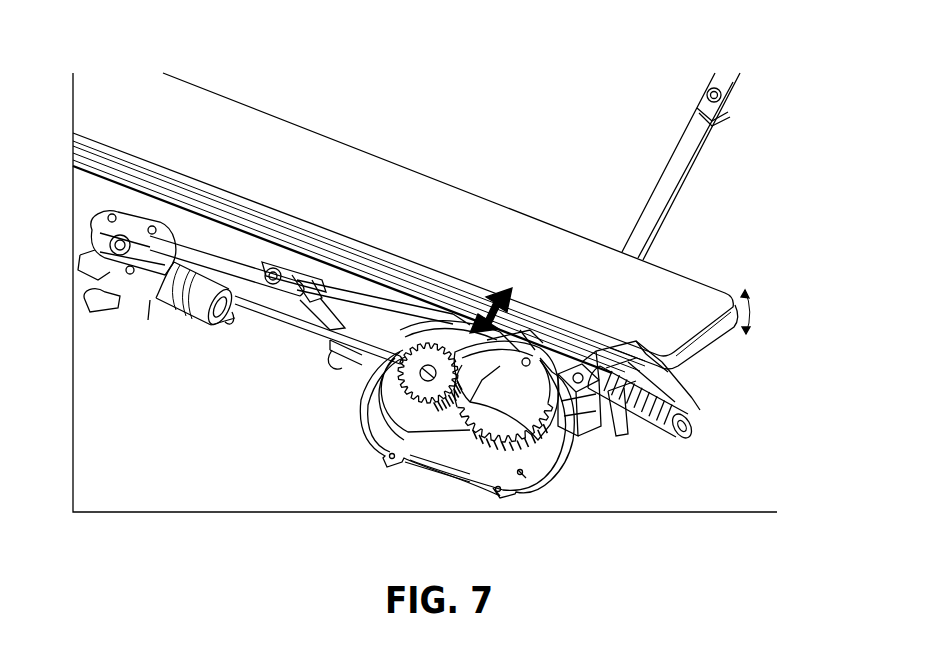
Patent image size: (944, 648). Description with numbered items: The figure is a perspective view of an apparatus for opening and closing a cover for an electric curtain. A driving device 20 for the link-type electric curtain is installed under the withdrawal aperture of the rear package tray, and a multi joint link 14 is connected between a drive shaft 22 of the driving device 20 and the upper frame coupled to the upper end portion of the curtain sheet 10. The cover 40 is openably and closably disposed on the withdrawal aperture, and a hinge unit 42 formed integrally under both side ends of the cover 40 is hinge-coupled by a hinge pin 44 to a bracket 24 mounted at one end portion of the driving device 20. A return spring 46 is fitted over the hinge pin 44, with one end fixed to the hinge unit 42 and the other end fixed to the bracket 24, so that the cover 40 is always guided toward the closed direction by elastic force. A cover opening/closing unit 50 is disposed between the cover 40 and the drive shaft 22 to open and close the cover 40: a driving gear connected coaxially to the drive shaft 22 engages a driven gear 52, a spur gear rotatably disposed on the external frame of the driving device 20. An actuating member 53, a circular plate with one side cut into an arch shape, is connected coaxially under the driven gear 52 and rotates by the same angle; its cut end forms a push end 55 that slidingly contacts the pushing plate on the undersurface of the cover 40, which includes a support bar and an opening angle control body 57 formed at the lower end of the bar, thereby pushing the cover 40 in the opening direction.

The curtain sheet 10 is at (558, 97).
The cover 40 is at (329, 132).
The multi joint link 14 is at (667, 192).
The opening angle control body 57 is at (447, 315).
The driving device 20 is at (163, 318).
The cover opening/closing unit 50 is at (359, 437).
The driven gear 52 is at (420, 400).
The actuating member 53 is at (424, 460).
The push end 55 is at (490, 400).
The drive shaft 22 is at (515, 400).
The bracket 24 is at (612, 432).
The return spring 46 is at (620, 442).
The hinge pin 44 is at (640, 432).
The hinge unit 42 is at (672, 392).